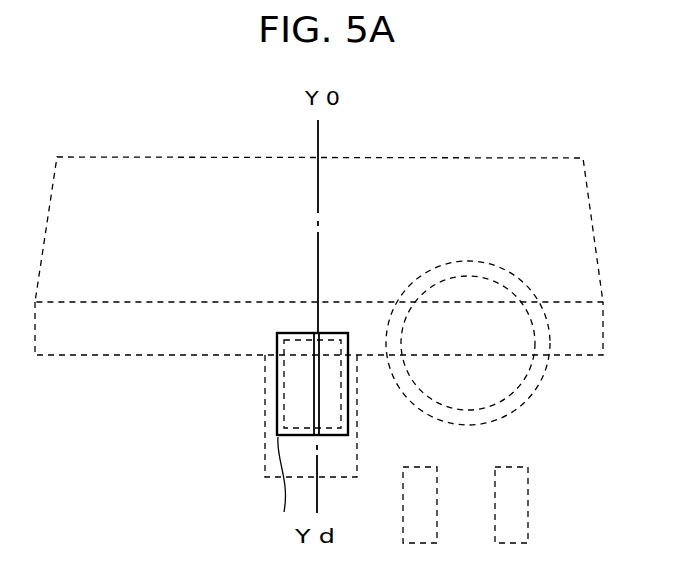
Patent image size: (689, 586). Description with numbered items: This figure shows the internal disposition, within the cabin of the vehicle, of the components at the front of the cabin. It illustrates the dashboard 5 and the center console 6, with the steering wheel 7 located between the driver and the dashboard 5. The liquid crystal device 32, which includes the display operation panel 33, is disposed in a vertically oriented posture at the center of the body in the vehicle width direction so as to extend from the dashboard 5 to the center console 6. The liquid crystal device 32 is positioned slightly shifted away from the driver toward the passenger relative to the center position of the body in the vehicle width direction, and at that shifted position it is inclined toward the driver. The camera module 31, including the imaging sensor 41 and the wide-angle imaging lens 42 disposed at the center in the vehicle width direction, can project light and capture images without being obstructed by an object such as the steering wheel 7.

The dashboard 5 is at (135, 358).
The center console 6 is at (265, 397).
The steering wheel 7 is at (533, 405).
The camera module 31 is at (325, 322).
The liquid crystal device 32 is at (328, 395).
The display operation panel 33 is at (270, 489).
The imaging sensor 41 is at (312, 325).
The wide-angle imaging lens 42 is at (311, 333).